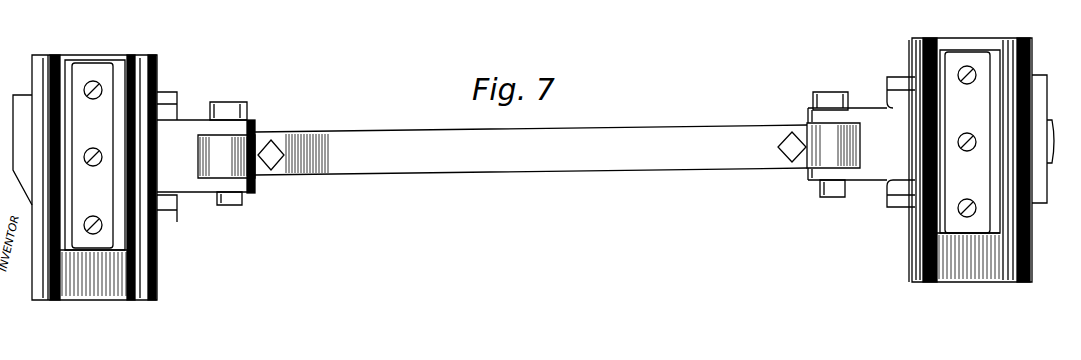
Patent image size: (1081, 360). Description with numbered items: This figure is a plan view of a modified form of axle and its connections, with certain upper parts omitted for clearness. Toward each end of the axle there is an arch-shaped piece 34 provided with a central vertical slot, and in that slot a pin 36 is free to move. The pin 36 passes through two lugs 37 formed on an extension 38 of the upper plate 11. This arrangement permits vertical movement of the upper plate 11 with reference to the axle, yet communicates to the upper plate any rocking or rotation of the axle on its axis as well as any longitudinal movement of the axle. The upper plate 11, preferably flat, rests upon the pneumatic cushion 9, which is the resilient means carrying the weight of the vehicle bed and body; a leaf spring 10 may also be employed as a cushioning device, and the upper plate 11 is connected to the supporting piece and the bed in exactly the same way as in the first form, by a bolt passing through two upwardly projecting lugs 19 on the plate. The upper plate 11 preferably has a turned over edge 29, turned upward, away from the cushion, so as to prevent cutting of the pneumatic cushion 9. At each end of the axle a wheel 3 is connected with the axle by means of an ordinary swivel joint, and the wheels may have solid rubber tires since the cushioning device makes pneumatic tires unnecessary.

The wheel 3 is at (561, 170).
The pneumatic cushion 9 is at (40, 73).
The leaf spring 10 is at (990, 77).
The upper plate 11 is at (117, 280).
The upwardly projecting lugs 19 is at (117, 85).
The turned over edge 29 is at (915, 50).
The arch-shaped piece 34 is at (258, 140).
The pin 36 is at (235, 205).
The lugs 37 is at (847, 117).
The extension 38 is at (526, 147).